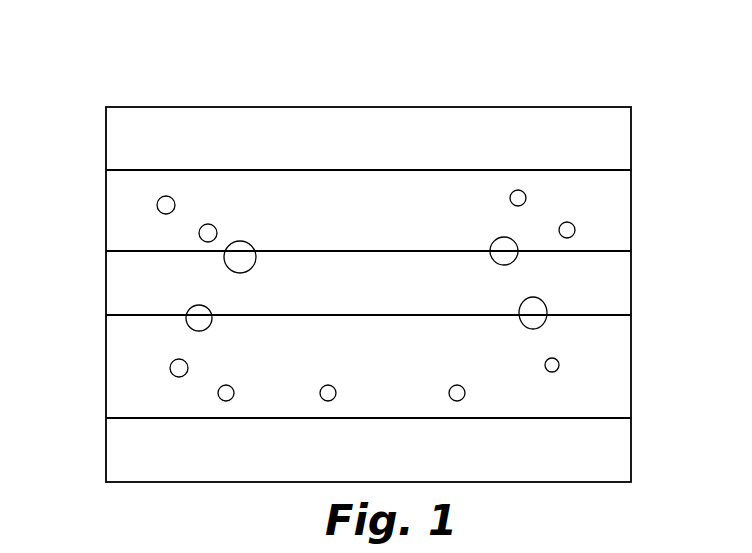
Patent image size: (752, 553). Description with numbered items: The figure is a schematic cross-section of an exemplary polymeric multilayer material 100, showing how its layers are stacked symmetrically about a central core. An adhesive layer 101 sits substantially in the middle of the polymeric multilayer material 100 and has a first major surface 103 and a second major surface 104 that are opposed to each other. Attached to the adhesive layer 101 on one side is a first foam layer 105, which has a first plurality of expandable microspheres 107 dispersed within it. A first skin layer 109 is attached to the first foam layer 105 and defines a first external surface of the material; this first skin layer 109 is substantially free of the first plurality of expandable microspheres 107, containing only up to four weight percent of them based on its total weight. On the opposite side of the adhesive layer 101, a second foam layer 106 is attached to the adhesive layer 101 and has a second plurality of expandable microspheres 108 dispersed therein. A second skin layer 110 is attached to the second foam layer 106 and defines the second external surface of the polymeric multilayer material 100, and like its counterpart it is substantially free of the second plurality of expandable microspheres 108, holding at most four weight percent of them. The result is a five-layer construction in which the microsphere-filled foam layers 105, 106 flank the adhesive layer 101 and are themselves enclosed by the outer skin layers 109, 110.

The polymeric multilayer material 100 is at (367, 252).
The adhesive layer 101 is at (118, 284).
The first major surface 103 is at (610, 250).
The second major surface 104 is at (610, 316).
The first foam layer 105 is at (118, 226).
The second foam layer 106 is at (118, 368).
The first plurality of expandable microspheres 107 is at (158, 201).
The second plurality of expandable microspheres 108 is at (559, 367).
The first skin layer 109 is at (118, 135).
The second skin layer 110 is at (118, 457).